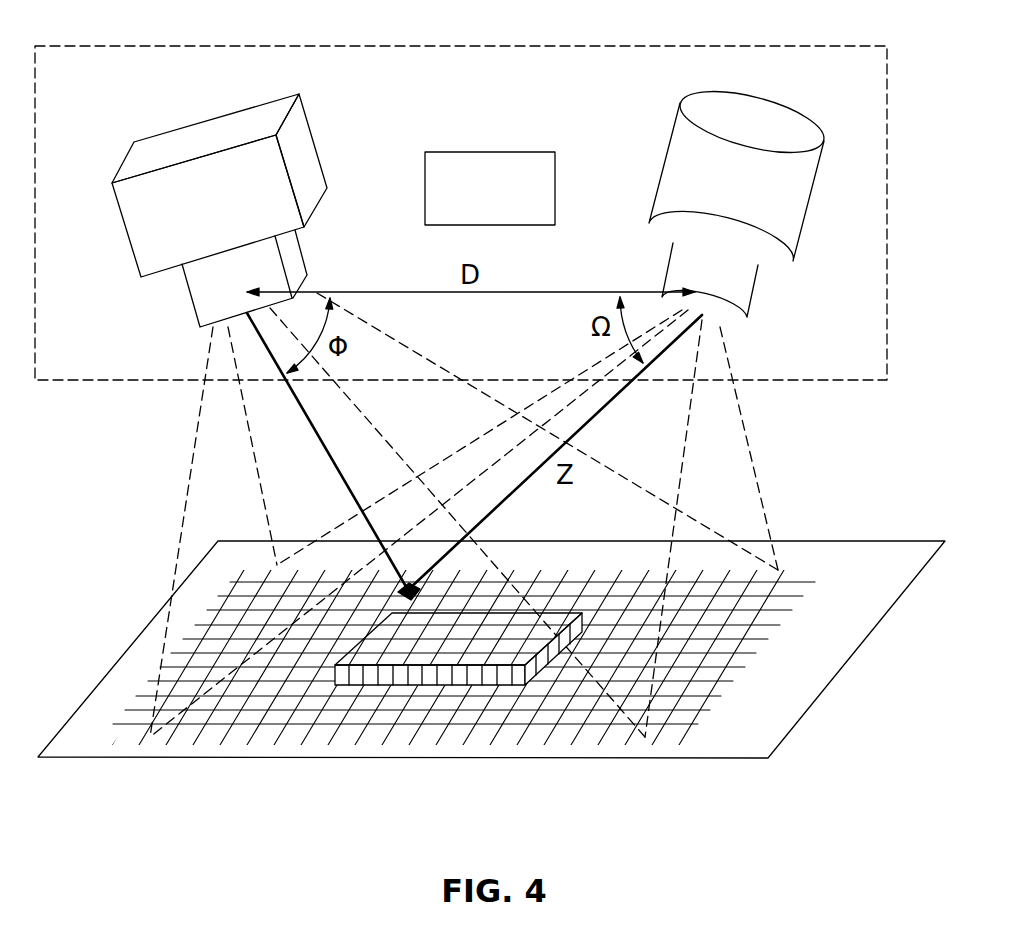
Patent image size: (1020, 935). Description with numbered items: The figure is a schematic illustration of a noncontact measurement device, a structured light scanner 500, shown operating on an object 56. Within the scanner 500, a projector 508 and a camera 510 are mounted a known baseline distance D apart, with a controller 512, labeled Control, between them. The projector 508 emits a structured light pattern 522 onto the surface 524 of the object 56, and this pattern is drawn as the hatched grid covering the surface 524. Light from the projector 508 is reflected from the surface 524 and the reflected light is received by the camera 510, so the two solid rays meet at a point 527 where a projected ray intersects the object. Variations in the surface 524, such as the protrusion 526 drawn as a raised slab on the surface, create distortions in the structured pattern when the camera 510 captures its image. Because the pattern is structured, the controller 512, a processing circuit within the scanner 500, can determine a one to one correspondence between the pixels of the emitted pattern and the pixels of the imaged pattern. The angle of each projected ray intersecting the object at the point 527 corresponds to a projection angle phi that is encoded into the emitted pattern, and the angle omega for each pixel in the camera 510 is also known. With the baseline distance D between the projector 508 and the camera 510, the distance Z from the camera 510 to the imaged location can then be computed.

The structured light scanner 500 is at (104, 42).
The projector 508 is at (305, 160).
The camera 510 is at (681, 167).
The controller 512 is at (502, 152).
The structured light pattern 522 is at (267, 729).
The surface 524 is at (888, 557).
The protrusion 526 is at (465, 677).
The point 527 is at (393, 583).
The object 56 is at (491, 615).